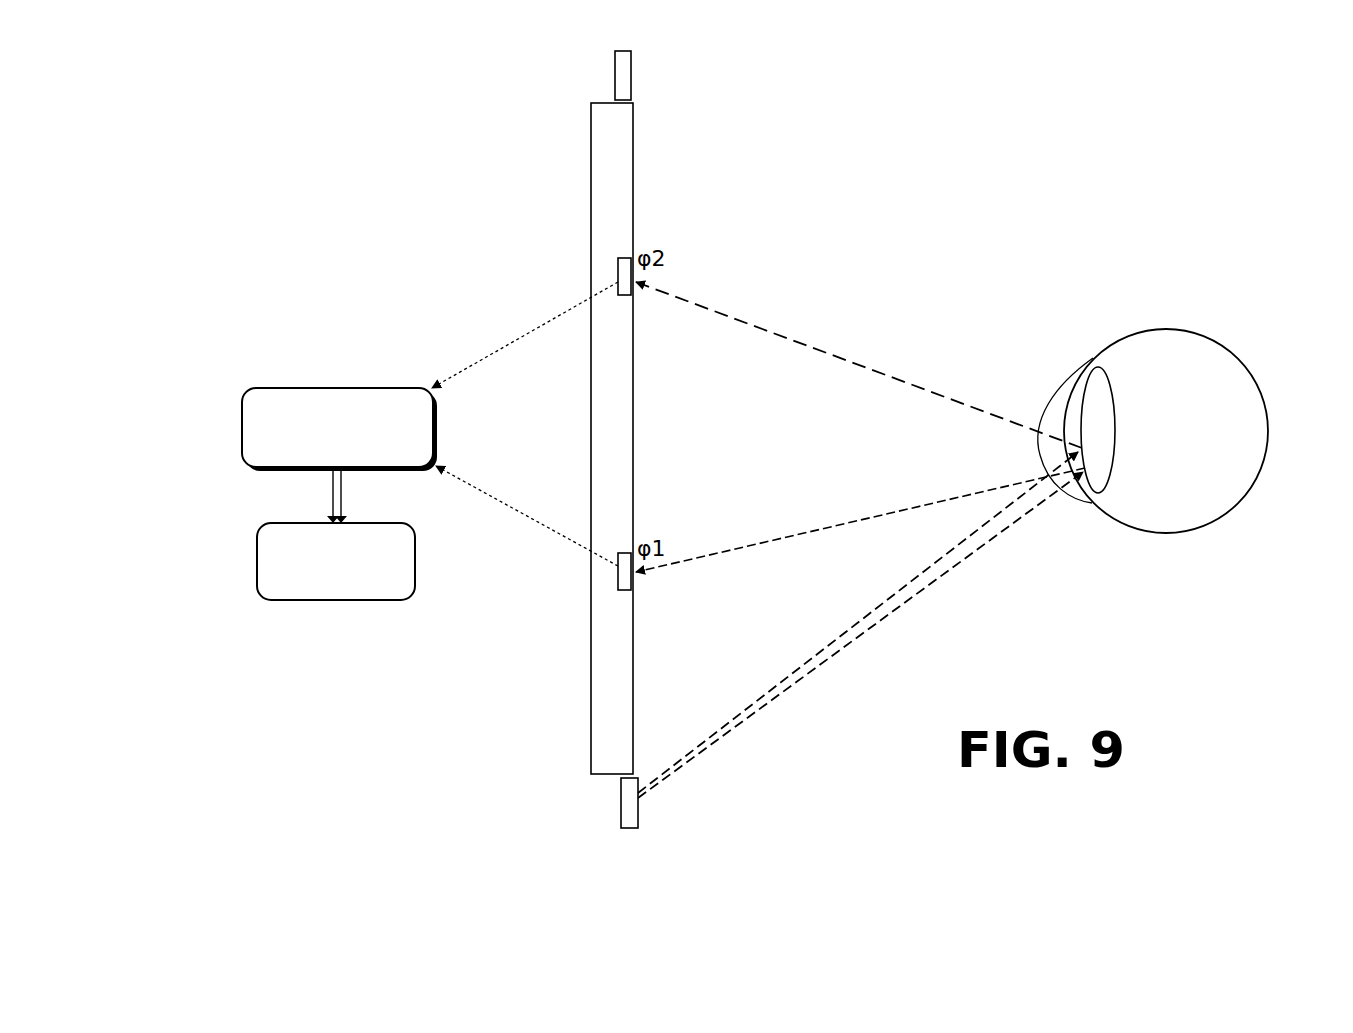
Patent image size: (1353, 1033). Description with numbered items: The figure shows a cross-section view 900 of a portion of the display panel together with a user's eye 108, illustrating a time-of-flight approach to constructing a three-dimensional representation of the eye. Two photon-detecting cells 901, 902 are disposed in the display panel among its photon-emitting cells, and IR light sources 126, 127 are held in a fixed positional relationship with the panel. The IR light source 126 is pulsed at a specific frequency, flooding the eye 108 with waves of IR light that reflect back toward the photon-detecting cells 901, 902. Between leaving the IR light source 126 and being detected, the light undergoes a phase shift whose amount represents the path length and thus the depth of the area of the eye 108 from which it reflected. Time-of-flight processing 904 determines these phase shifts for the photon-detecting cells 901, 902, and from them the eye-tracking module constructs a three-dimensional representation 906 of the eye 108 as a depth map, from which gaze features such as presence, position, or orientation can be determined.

The cross-section view 900 is at (751, 182).
The IR light source 127 is at (615, 69).
The IR light source 126 is at (621, 798).
The photon-detecting cell 901 is at (618, 279).
The photon-detecting cell 902 is at (618, 582).
The time-of-flight processing 904 is at (242, 434).
The 3D representation of the eye 906 is at (257, 564).
The eye 108 is at (1157, 329).